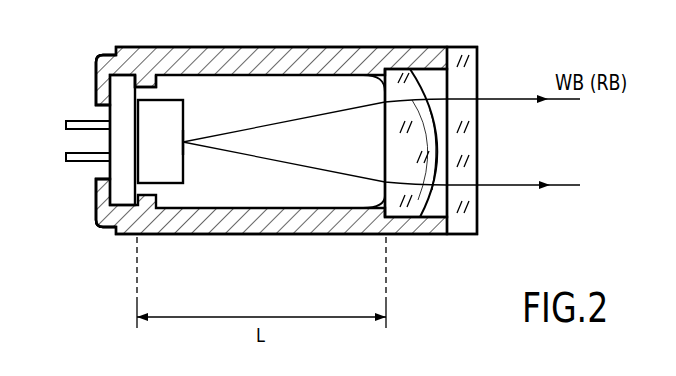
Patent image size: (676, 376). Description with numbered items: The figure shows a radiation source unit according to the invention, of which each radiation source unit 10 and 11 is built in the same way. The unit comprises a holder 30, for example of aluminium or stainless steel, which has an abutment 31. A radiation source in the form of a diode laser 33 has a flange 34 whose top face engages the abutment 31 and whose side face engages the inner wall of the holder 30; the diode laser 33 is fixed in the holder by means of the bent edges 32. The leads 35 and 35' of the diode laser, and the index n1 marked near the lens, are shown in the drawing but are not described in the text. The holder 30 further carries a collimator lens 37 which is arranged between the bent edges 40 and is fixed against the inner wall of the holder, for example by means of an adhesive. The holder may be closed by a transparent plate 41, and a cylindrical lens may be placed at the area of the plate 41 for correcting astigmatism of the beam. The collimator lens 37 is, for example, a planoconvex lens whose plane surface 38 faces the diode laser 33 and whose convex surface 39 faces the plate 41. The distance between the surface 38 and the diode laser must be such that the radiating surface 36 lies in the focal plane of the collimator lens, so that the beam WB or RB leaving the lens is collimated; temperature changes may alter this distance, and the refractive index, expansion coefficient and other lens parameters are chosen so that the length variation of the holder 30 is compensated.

The radiation source unit 10 is at (331, 122).
The radiation source unit 11 is at (556, 33).
The holder 30 is at (239, 53).
The abutment 31 is at (146, 86).
The bent edges 32 is at (103, 65).
The diode laser 33 is at (166, 172).
The flange 34 is at (123, 192).
The lead 35 is at (75, 123).
The lead 35' is at (75, 161).
The radiating surface 36 is at (186, 168).
The collimator lens 37 is at (410, 172).
The plane surface 38 is at (385, 172).
The convex surface 39 is at (425, 195).
The refractive index n1 is at (420, 190).
The bent edges 40 is at (378, 72).
The transparent plate 41 is at (462, 220).